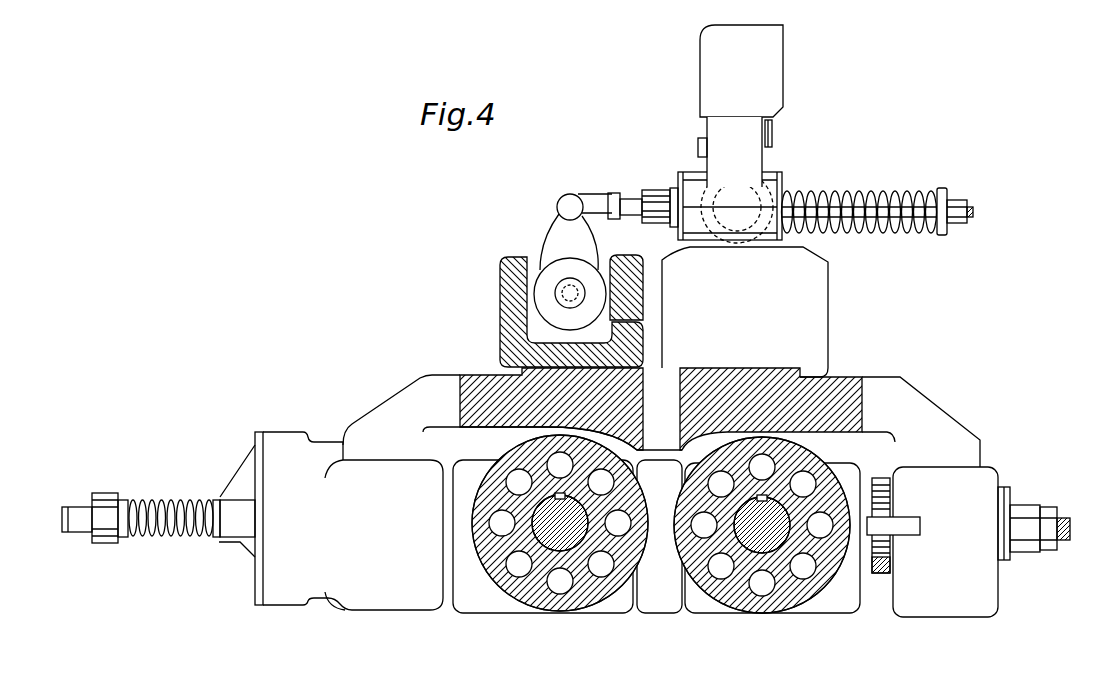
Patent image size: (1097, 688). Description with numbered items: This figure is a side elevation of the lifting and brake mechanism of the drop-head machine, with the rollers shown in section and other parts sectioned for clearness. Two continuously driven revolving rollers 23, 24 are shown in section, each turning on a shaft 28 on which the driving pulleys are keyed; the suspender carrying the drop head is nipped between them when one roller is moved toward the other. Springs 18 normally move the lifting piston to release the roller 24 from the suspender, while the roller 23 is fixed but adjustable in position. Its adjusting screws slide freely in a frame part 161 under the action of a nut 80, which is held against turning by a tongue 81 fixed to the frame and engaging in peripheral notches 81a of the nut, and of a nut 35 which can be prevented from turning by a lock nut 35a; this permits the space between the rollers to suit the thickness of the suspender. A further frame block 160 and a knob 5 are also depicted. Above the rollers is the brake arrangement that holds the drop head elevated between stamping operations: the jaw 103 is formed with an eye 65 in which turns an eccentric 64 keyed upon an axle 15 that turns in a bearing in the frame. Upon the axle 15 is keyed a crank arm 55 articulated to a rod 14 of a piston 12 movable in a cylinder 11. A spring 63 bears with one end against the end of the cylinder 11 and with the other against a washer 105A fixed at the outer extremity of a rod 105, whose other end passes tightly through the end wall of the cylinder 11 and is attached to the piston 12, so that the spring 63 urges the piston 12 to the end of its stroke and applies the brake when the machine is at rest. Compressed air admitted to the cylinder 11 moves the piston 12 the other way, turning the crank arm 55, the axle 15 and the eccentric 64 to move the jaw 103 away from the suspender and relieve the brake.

The knob 5 is at (707, 78).
The cylinder 11 is at (768, 183).
The piston 12 is at (666, 192).
The rod 14 is at (628, 198).
The axle 15 is at (560, 302).
The springs 18 is at (168, 507).
The roller 23 is at (818, 460).
The roller 24 is at (505, 460).
The shafts 28 is at (543, 527).
The nut 35 is at (1025, 510).
The lock nut 35a is at (1050, 550).
The crank arm 55 is at (553, 233).
The spring 63 is at (937, 190).
The eccentric 64 is at (558, 288).
The eye 65 is at (545, 275).
The nut 80 is at (884, 477).
The tongue 81 is at (907, 534).
The peripheral notches 81a is at (868, 562).
The jaw 103 is at (627, 265).
The rod 105 is at (852, 190).
The washer 105A is at (955, 202).
The block 160 is at (384, 535).
The frame part 161 is at (945, 542).